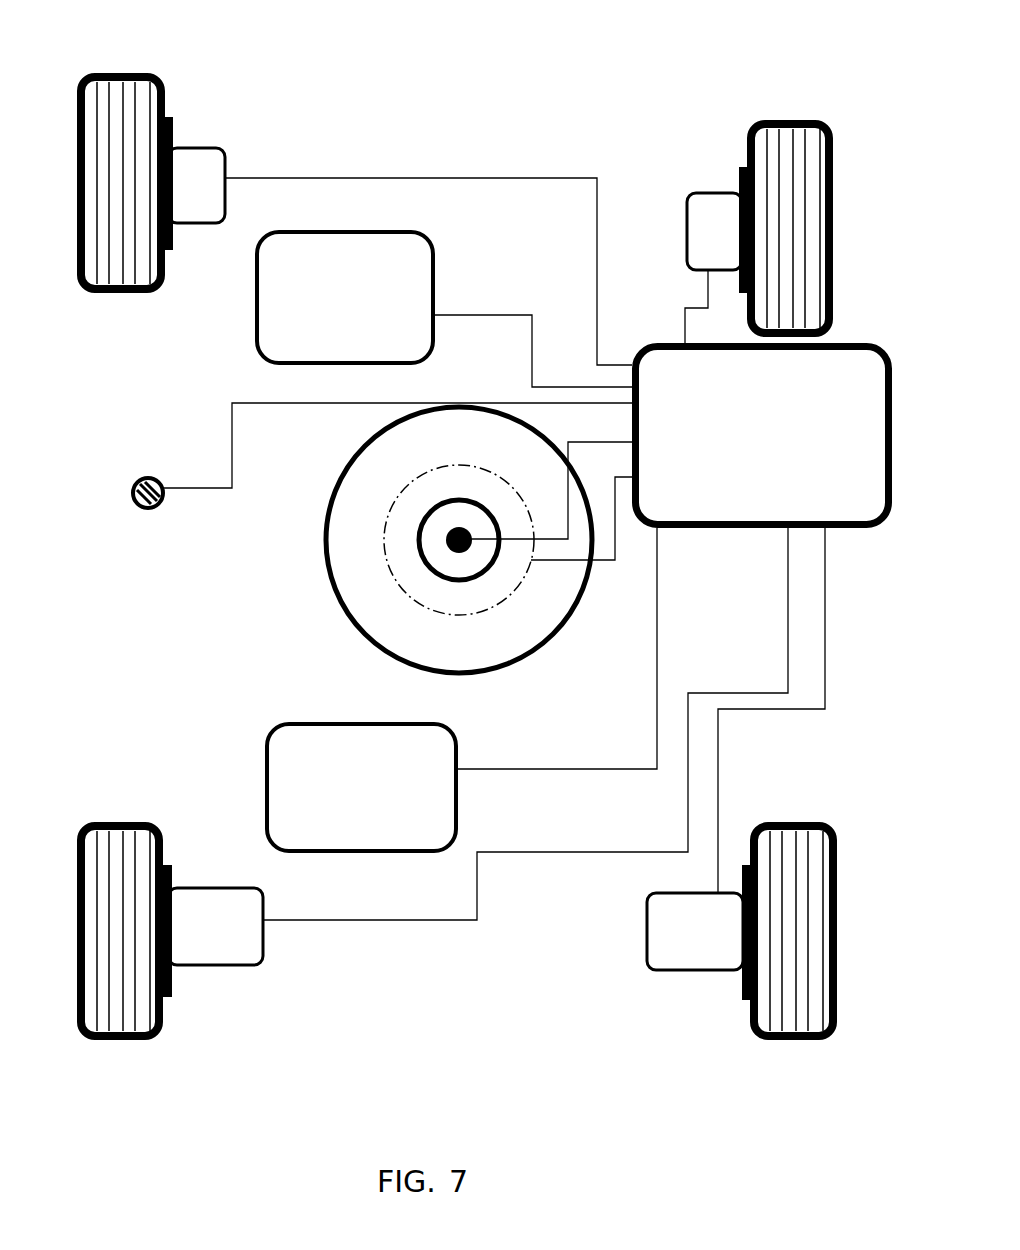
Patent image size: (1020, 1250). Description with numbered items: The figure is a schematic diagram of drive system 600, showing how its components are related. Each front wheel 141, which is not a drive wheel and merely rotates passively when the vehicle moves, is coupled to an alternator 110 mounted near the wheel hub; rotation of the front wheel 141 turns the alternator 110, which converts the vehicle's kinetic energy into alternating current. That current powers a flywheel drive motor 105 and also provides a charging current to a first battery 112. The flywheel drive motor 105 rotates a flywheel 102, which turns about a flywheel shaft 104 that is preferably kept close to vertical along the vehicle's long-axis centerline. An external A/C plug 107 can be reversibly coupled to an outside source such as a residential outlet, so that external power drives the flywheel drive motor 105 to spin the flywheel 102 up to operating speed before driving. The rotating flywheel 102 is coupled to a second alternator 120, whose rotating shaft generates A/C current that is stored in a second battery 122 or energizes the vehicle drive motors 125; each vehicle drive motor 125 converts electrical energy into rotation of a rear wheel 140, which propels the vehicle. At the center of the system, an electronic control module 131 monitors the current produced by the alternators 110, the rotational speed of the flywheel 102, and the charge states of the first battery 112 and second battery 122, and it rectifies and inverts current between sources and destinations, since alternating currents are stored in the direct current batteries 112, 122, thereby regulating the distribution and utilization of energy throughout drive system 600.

The drive system 600 is at (623, 94).
The flywheel 102 is at (357, 592).
The flywheel shaft 104 is at (450, 545).
The flywheel drive motor 105 is at (383, 530).
The A/C plug 107 is at (134, 483).
The alternator 110 is at (208, 148).
The first battery 112 is at (444, 309).
The second alternator 120 is at (459, 580).
The second battery 122 is at (462, 689).
The vehicle drive motor 125 is at (262, 965).
The electronic control module 131 is at (762, 436).
The rear wheel 140 is at (113, 823).
The front wheel 141 is at (123, 293).